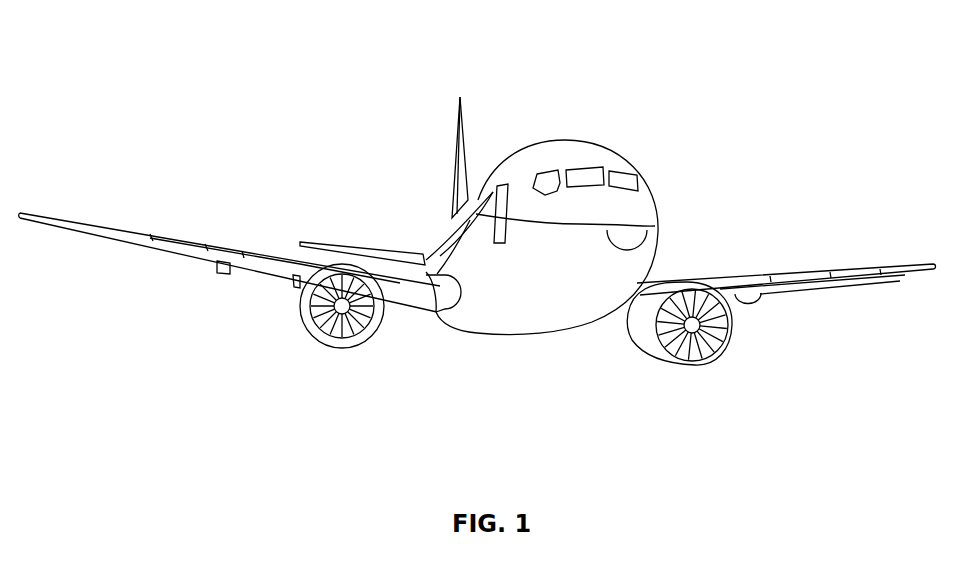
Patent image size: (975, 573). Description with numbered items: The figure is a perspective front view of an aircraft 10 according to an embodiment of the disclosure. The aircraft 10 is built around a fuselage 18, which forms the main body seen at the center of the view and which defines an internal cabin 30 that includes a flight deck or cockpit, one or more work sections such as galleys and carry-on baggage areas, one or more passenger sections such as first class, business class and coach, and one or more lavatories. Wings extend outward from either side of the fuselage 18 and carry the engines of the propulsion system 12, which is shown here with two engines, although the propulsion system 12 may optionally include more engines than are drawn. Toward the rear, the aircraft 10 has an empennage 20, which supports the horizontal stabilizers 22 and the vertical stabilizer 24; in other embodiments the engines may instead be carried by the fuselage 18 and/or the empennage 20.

The aircraft 10 is at (245, 47).
The propulsion system 12 is at (244, 315).
The fuselage 18 is at (655, 200).
The empennage 20 is at (442, 224).
The horizontal stabilizers 22 is at (337, 243).
The vertical stabilizer 24 is at (452, 140).
The internal cabin 30 is at (584, 170).